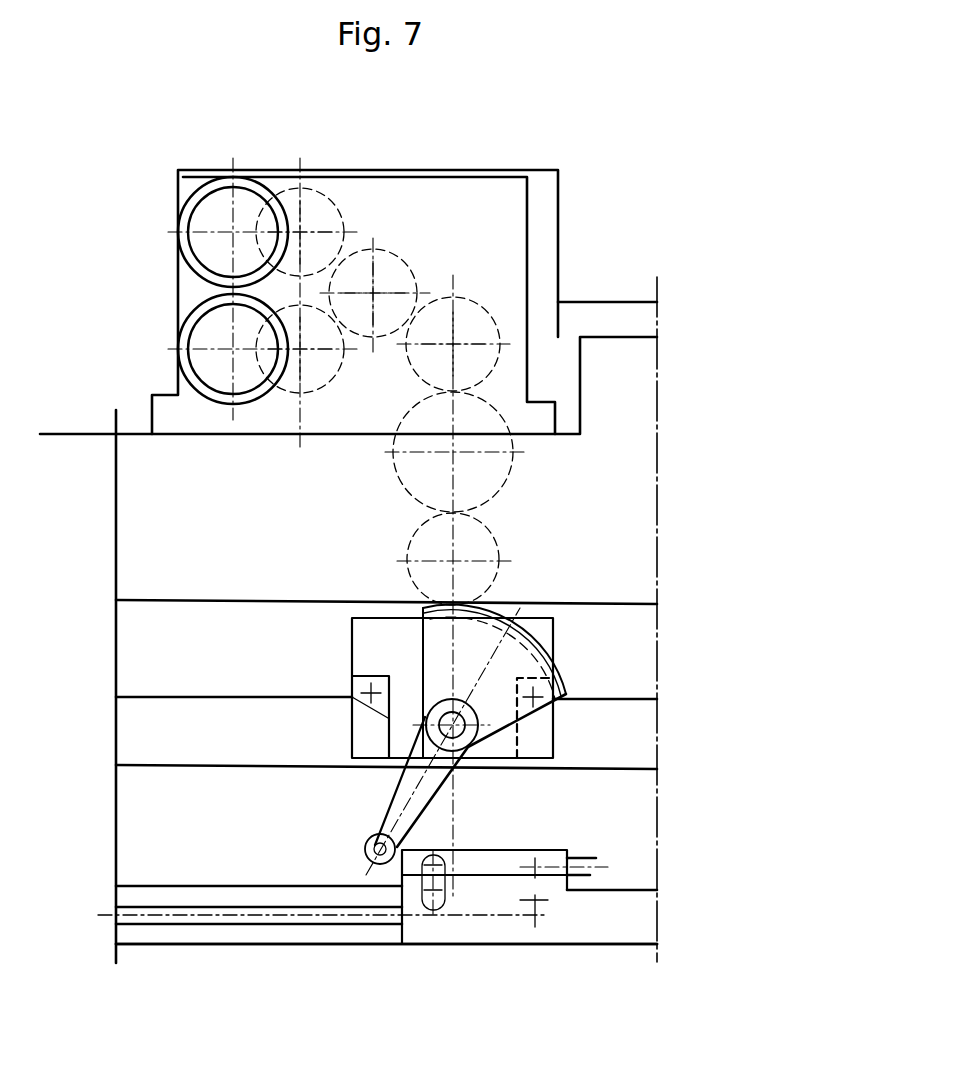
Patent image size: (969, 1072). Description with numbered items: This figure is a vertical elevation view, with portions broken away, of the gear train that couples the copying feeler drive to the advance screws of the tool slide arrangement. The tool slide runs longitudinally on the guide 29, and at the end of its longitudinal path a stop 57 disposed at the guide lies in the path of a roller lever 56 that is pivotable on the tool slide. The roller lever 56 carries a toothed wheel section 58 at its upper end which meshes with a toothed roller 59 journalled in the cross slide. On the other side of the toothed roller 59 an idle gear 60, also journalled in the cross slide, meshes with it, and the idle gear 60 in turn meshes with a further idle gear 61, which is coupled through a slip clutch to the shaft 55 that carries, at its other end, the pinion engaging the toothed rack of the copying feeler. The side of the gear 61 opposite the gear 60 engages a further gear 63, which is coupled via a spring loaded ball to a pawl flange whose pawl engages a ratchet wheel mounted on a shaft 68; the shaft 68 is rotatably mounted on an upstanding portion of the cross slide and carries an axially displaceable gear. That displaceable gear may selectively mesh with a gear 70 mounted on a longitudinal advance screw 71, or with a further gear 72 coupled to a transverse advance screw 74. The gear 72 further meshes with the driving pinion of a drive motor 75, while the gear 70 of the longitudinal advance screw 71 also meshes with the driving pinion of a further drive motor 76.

The guide 29 is at (599, 831).
The shaft 55 is at (454, 343).
The roller lever 56 is at (408, 782).
The stop 57 is at (418, 913).
The toothed wheel section 58 is at (533, 663).
The toothed roller 59 is at (480, 550).
The idle gear 60 is at (490, 463).
The idle gear 61 is at (495, 318).
The gear 63 is at (402, 253).
The shaft 68 is at (375, 291).
The gear 70 is at (293, 397).
The longitudinal advance screw 71 is at (300, 349).
The gear 72 is at (288, 187).
The transverse advance screw 74 is at (300, 232).
The drive motor 75 is at (188, 205).
The drive motor 76 is at (188, 322).